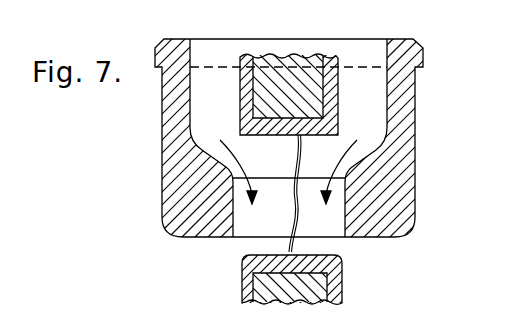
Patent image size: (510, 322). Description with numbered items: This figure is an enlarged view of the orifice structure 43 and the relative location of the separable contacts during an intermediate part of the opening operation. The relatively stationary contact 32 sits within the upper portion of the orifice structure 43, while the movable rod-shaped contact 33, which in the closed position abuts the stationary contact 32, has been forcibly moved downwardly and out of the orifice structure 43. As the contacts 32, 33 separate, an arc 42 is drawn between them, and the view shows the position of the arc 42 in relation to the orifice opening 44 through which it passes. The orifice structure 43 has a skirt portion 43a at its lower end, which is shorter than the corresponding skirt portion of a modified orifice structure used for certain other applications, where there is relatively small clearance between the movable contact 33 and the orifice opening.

The relatively stationary contact 32 is at (247, 93).
The movable rod-shaped contact 33 is at (252, 287).
The arc 42 is at (296, 199).
The orifice structure 43 is at (413, 205).
The skirt portion 43a is at (172, 202).
The orifice opening 44 is at (236, 211).